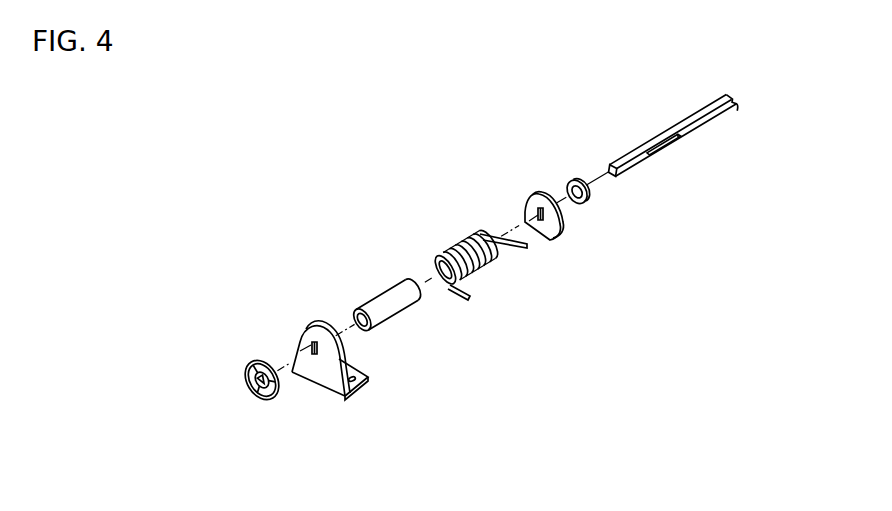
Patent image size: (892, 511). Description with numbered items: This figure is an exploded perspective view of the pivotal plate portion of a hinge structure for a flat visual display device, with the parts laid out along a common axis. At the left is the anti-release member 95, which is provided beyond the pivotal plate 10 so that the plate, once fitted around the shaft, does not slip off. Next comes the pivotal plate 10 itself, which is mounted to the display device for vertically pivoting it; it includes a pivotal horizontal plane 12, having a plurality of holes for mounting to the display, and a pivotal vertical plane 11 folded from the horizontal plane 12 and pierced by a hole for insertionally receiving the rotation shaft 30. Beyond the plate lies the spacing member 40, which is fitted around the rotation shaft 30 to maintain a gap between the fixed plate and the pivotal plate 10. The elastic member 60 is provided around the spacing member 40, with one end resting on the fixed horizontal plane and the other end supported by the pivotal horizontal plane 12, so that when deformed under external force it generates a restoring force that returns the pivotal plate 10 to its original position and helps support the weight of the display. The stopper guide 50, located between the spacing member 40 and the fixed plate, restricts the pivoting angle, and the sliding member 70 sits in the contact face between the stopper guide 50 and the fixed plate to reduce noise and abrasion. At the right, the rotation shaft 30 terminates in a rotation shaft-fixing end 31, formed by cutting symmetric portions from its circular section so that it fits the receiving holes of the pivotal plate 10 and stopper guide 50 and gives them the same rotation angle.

The pivotal plate 10 is at (335, 370).
The pivotal vertical plane 11 is at (300, 340).
The pivotal horizontal plane 12 is at (372, 412).
The rotation shaft 30 is at (682, 160).
The rotation shaft-fixing end 31 is at (647, 158).
The spacing member 40 is at (388, 307).
The stopper guide 50 is at (537, 190).
The elastic member 60 is at (462, 238).
The sliding member 70 is at (575, 180).
The anti-release member 95 is at (248, 364).